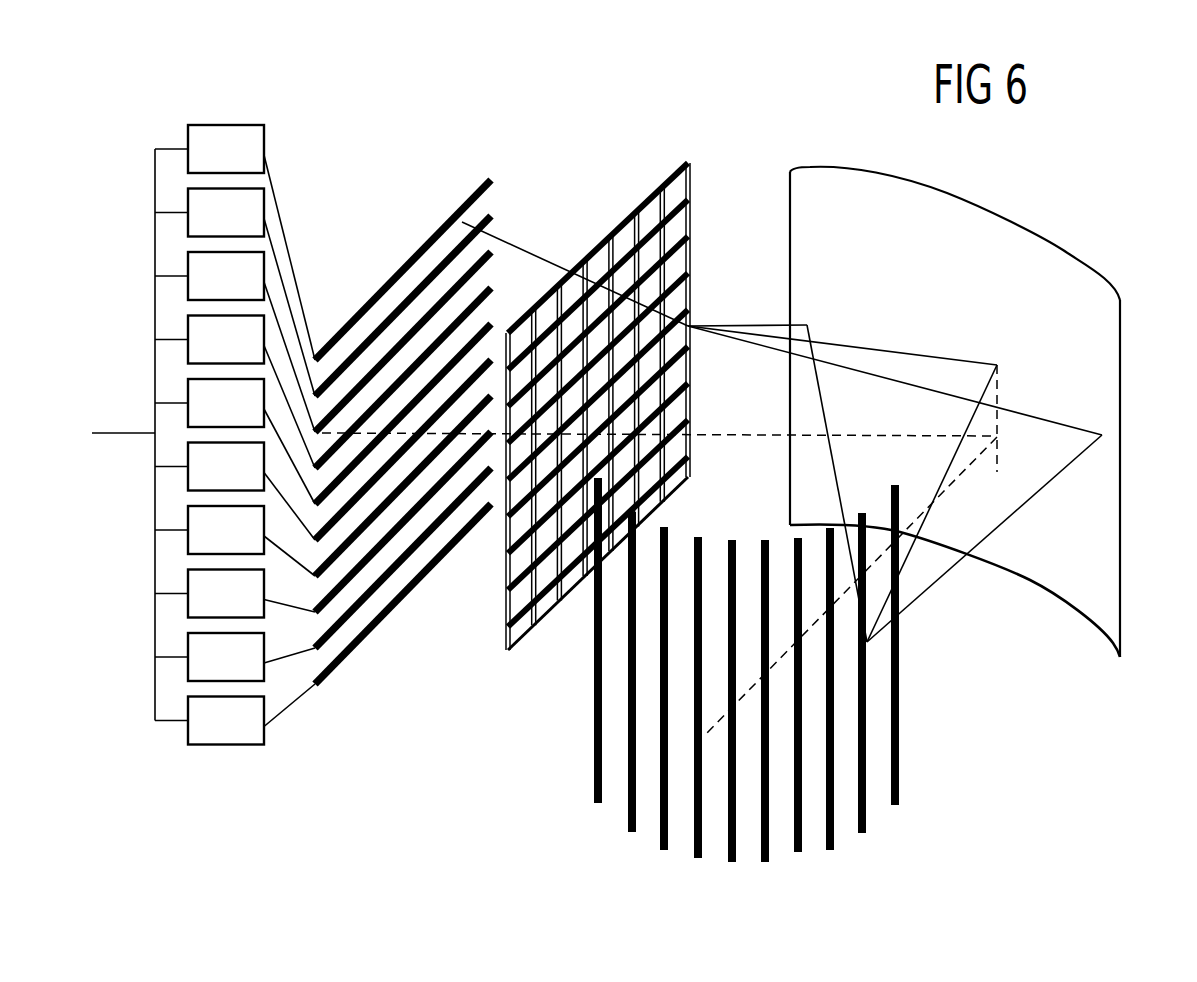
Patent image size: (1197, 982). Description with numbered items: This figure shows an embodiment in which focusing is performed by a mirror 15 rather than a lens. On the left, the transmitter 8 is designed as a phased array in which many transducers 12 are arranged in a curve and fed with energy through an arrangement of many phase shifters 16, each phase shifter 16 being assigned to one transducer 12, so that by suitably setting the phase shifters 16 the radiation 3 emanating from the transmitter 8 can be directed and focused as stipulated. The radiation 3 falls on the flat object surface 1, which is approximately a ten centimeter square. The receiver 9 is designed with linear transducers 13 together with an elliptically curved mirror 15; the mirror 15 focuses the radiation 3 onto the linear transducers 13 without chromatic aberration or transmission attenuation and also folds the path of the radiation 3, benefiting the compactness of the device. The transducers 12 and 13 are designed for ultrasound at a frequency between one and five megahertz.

The object surface 1 is at (614, 205).
The radiation 3 is at (738, 325).
The transmitter 8 is at (486, 115).
The receiver 9 is at (1148, 210).
The transducers 12 is at (420, 543).
The linear transducers 13 is at (773, 857).
The mirror 15 is at (1047, 587).
The phase shifters 16 is at (188, 483).